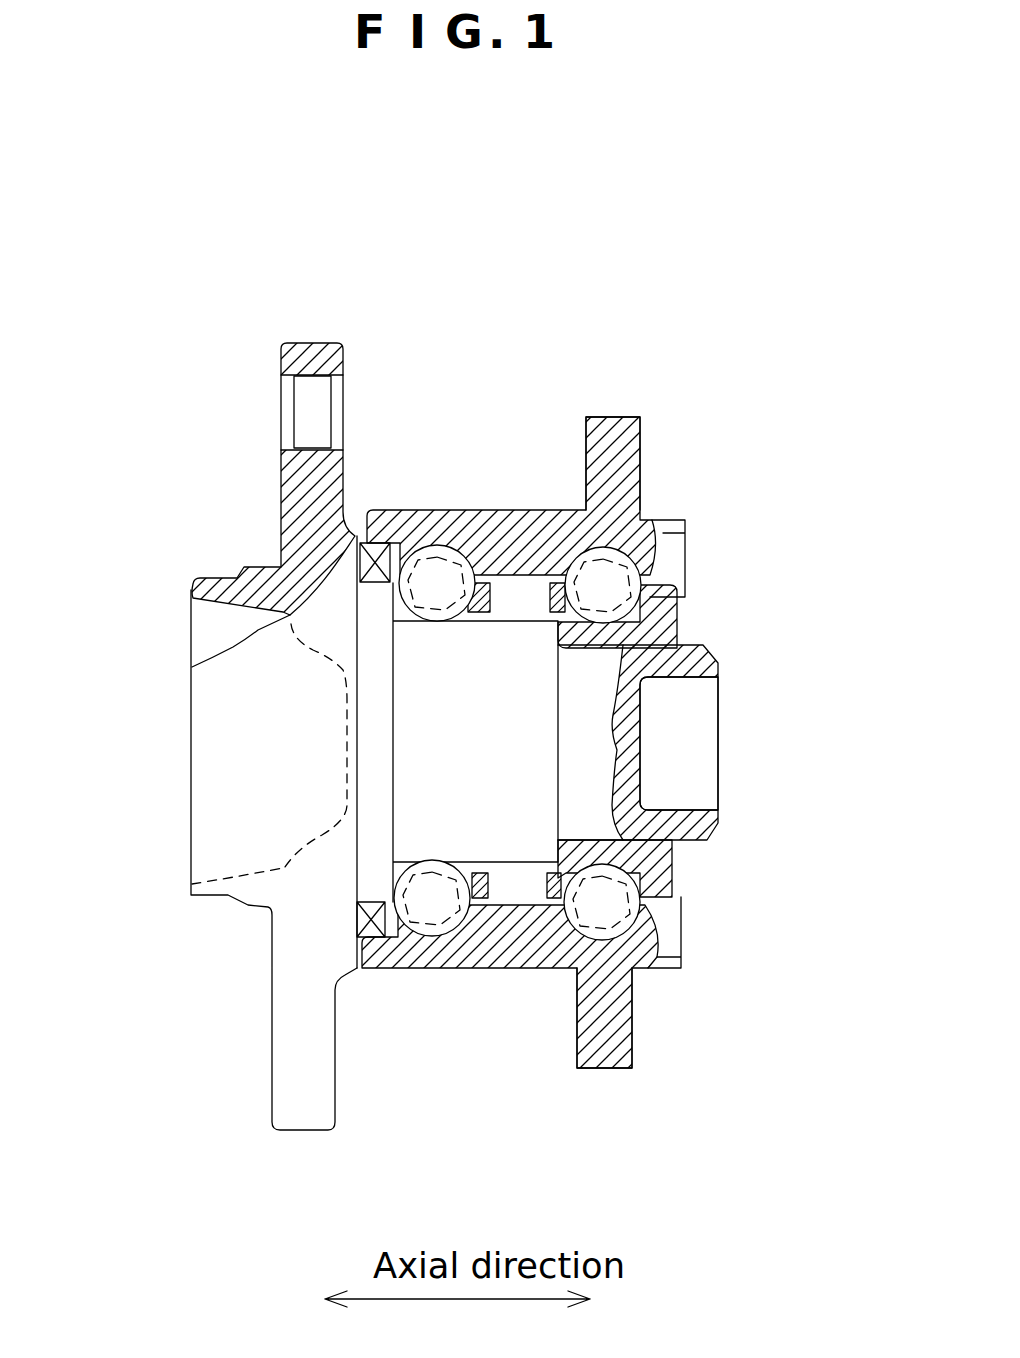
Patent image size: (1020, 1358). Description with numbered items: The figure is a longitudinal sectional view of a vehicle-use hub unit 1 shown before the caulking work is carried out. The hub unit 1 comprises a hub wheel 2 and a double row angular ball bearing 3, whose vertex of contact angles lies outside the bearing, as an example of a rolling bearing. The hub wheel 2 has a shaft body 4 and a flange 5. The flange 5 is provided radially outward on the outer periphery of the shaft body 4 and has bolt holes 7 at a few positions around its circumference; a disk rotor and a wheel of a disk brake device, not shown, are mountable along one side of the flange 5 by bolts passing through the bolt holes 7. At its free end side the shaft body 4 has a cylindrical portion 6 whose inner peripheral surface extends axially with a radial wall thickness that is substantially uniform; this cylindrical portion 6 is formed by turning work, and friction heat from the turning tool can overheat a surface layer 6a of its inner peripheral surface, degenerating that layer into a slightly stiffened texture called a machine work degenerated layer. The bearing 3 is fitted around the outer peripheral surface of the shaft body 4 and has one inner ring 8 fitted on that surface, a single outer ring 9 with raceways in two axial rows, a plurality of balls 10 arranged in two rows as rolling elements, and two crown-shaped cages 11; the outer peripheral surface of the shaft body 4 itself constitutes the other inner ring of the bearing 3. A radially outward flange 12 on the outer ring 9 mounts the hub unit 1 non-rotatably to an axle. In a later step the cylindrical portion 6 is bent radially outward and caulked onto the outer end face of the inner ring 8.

The hub unit 1 is at (568, 272).
The hub wheel 2 is at (188, 818).
The double row angular ball bearing 3 is at (443, 530).
The shaft body 4 is at (408, 828).
The flange 5 is at (318, 350).
The cylindrical portion 6 is at (700, 647).
The surface layer 6a is at (678, 677).
The bolt holes 7 is at (322, 413).
The inner ring 8 is at (677, 615).
The outer ring 9 is at (524, 510).
The balls 10 is at (613, 560).
The crown-shaped cages 11 is at (547, 905).
The radially outward flange 12 is at (610, 418).